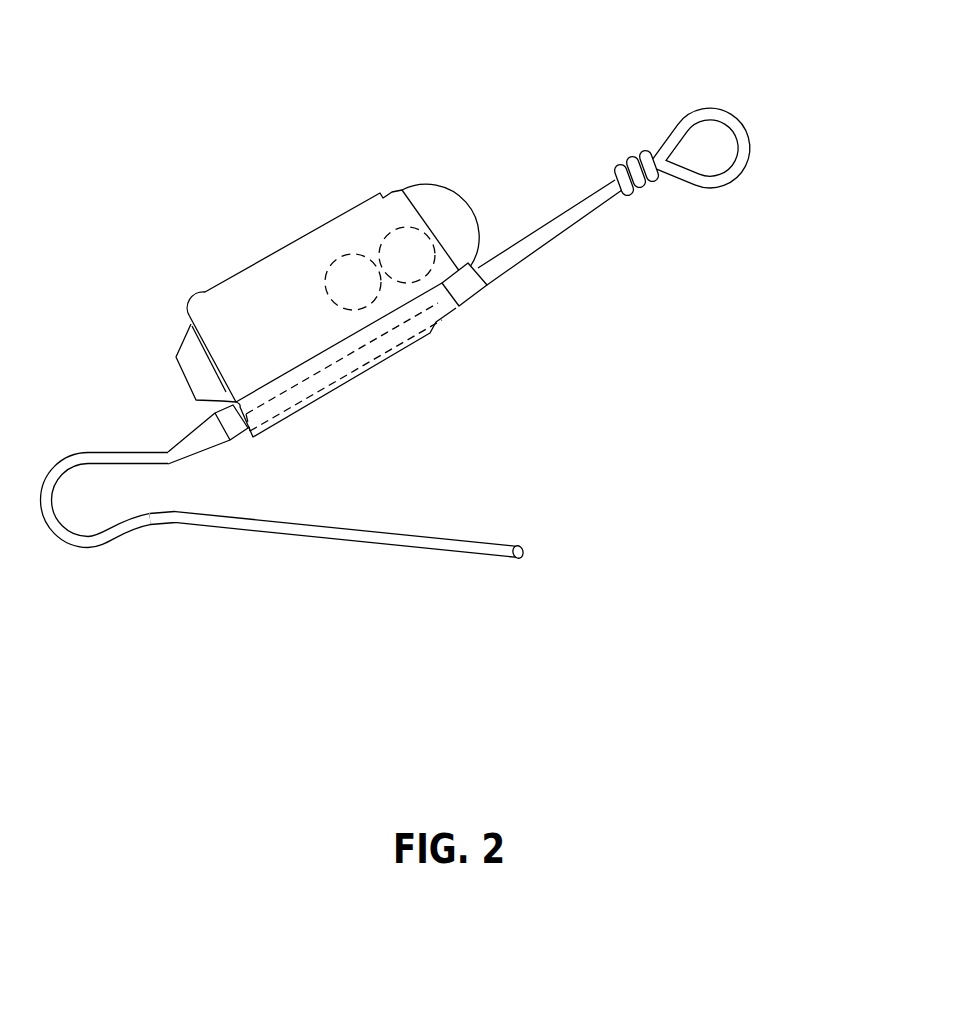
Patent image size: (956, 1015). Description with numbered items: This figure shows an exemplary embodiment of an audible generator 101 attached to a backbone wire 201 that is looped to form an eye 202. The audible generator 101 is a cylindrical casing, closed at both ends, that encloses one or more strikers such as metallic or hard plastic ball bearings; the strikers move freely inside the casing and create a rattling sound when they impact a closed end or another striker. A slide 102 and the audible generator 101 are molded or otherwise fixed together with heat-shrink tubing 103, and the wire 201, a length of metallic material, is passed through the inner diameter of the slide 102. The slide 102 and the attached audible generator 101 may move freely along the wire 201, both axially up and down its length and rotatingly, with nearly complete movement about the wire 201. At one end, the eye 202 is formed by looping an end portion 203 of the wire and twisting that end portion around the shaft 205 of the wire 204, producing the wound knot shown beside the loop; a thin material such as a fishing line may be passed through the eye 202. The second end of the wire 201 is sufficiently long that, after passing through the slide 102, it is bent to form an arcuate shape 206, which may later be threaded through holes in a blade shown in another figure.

The audible generator 101 is at (436, 170).
The slide 102 is at (489, 311).
The heat-shrink tubing 103 is at (316, 292).
The wire 201 is at (365, 581).
The eye 202 is at (745, 150).
The end portion of the wire 203 is at (713, 135).
The wire 204 is at (672, 198).
The shaft of the wire 205 is at (555, 239).
The arcuate shape 206 is at (147, 473).